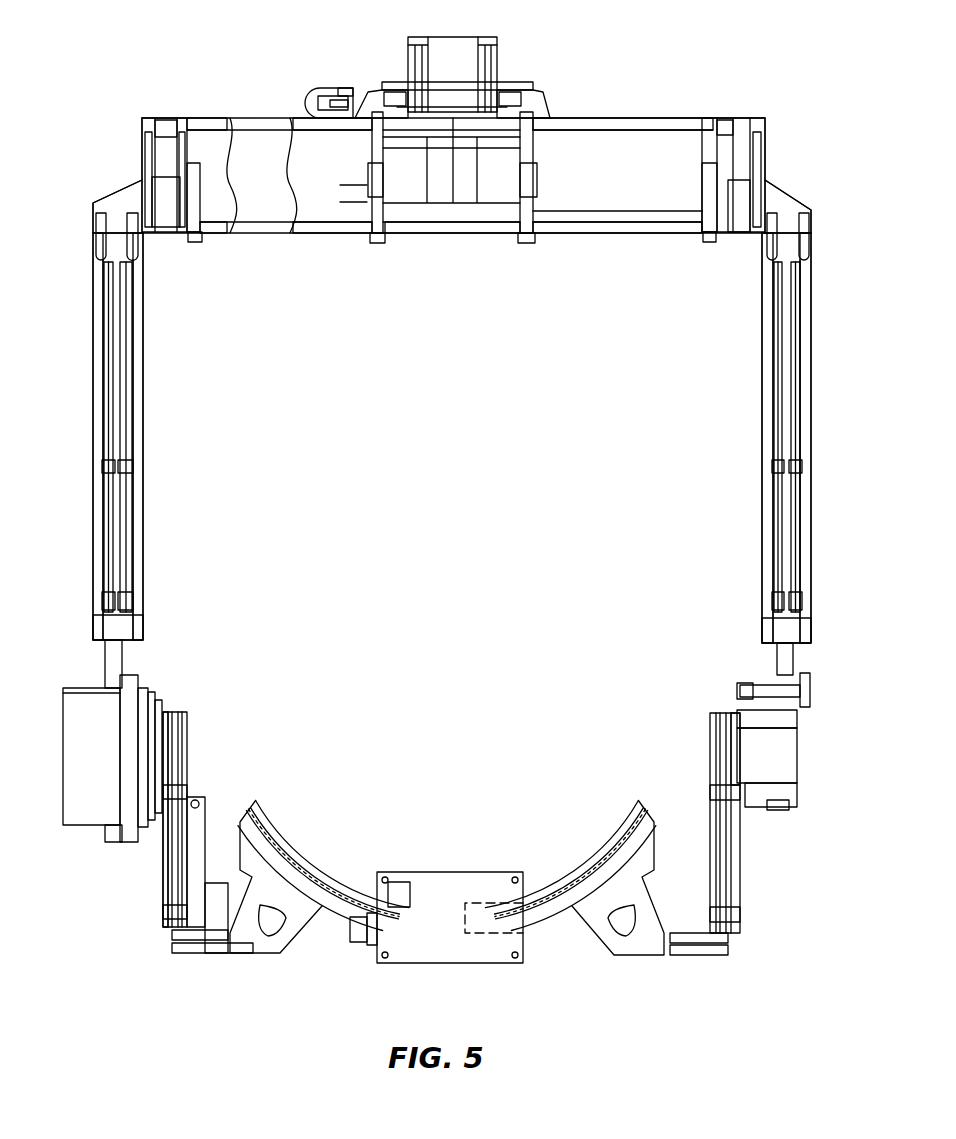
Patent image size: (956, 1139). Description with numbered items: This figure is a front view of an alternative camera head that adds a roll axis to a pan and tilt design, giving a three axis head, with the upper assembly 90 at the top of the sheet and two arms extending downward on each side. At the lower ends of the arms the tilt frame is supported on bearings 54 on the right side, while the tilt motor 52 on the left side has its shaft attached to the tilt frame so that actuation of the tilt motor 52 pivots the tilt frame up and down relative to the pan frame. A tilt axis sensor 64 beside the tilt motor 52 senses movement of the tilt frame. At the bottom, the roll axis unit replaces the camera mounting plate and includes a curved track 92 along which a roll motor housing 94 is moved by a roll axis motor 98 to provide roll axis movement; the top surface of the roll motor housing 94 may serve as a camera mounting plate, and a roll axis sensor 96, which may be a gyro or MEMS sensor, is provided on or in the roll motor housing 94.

The drive housing assembly 90 is at (265, 112).
The curved track 92 is at (308, 841).
The roll motor housing 94 is at (430, 930).
The roll axis sensor 96 is at (400, 883).
The roll axis motor 98 is at (473, 905).
The tilt motor 52 is at (93, 790).
The bearings 54 is at (797, 793).
The tilt axis sensor 64 is at (167, 900).